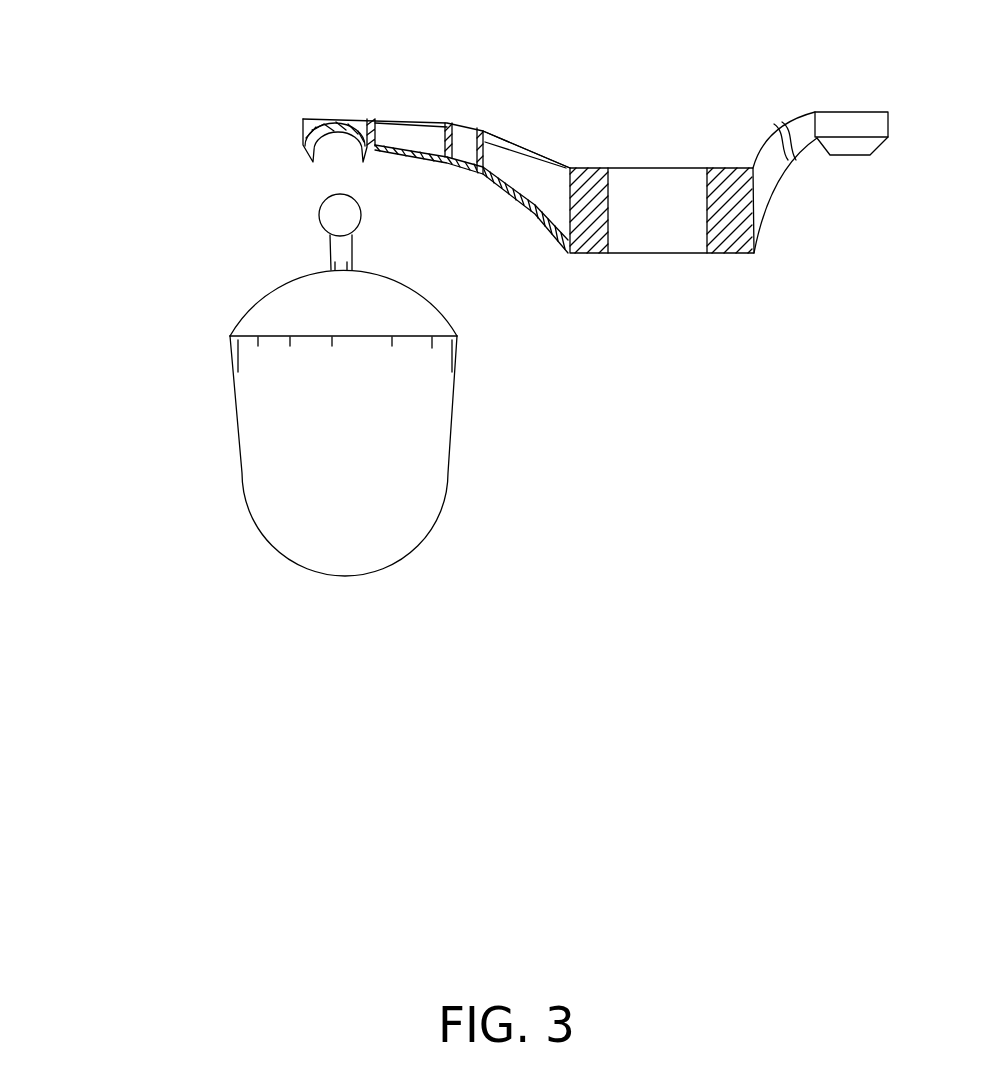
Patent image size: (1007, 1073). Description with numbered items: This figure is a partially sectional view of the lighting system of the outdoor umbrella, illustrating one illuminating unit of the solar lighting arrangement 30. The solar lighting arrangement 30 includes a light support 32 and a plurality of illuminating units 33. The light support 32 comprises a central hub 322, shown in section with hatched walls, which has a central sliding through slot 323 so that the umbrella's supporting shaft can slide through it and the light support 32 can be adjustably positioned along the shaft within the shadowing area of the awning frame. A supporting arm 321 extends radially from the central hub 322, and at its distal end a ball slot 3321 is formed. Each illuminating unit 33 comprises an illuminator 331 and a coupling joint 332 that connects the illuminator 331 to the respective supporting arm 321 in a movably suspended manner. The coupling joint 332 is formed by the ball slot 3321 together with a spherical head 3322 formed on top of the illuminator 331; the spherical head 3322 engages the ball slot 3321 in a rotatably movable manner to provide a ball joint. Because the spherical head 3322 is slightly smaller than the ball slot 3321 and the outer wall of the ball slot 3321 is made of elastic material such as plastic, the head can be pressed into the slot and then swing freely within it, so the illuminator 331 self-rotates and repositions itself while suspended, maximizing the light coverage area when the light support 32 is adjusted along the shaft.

The solar lighting arrangement 30 is at (230, 85).
The light support 32 is at (627, 72).
The supporting arm 321 is at (507, 147).
The central hub 322 is at (596, 250).
The central sliding through slot 323 is at (657, 197).
The illuminating unit 33 is at (117, 355).
The illuminator 331 is at (267, 513).
The coupling joint 332 is at (195, 237).
The ball slot 3321 is at (338, 152).
The spherical head 3322 is at (345, 222).